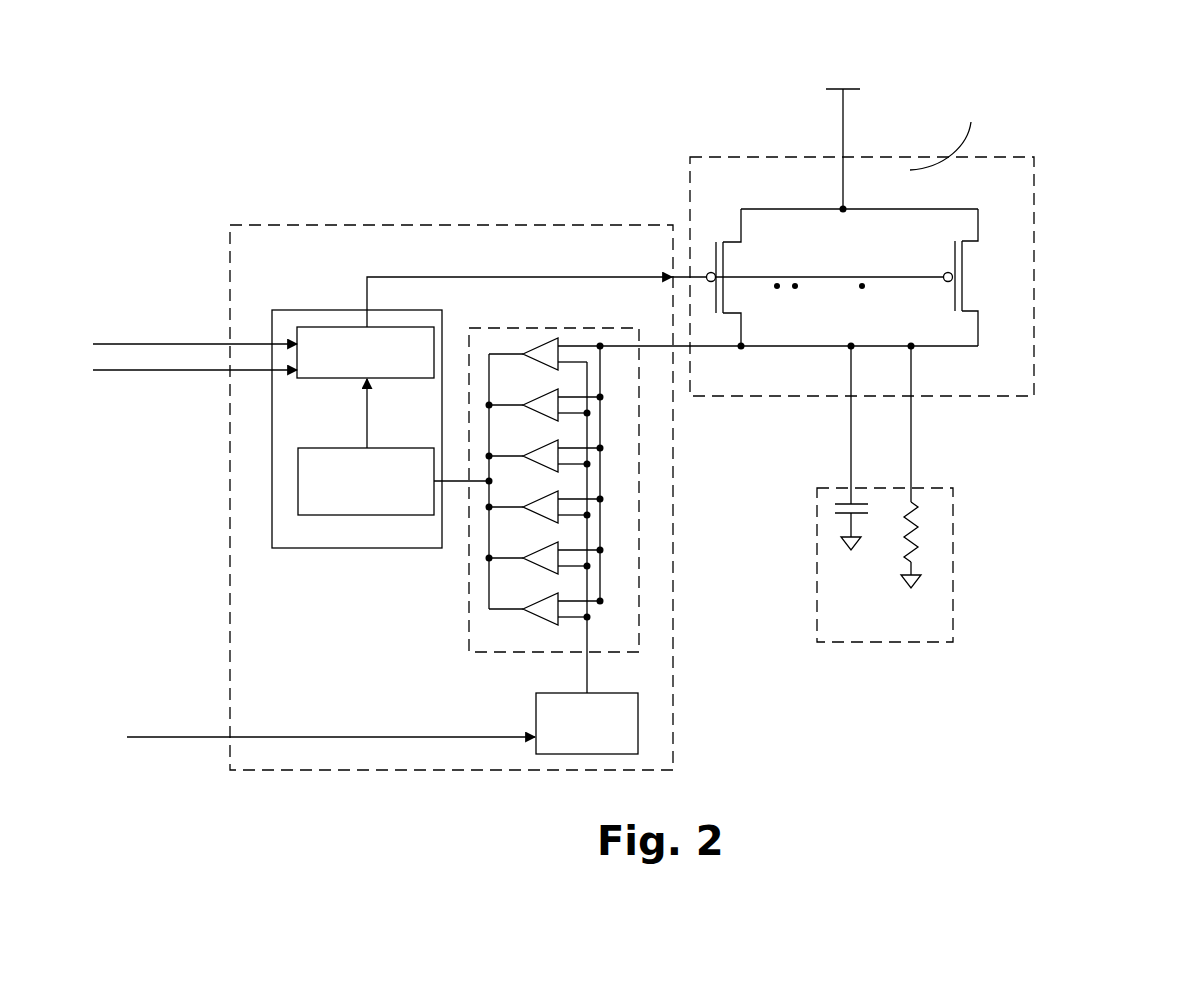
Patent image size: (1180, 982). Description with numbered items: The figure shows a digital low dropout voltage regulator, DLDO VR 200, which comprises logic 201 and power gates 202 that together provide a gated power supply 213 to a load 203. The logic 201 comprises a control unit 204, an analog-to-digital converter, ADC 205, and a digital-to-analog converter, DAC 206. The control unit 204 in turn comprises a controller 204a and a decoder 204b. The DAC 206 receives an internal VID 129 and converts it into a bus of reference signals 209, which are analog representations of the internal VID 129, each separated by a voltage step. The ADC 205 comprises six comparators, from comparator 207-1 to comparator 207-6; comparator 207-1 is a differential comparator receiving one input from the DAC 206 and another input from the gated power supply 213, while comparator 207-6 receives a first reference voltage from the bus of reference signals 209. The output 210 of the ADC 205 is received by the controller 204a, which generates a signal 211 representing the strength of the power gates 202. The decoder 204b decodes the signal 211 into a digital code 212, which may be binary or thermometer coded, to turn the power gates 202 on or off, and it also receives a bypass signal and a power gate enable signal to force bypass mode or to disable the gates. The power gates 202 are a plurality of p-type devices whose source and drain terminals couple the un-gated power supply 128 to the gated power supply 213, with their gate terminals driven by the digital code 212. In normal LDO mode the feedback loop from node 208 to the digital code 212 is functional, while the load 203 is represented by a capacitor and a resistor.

The DLDO VR 200 is at (613, 410).
The logic 201 is at (451, 497).
The power gates 202 is at (862, 248).
The load 203 is at (885, 494).
The control unit 204 is at (357, 429).
The controller 204a is at (366, 481).
The decoder 204b is at (365, 352).
The analog-to-digital converter (ADC) 205 is at (526, 496).
The digital-to-analog converter (DAC) 206 is at (587, 723).
The comparator 207-1 is at (553, 357).
The comparator 207-6 is at (545, 612).
The feedback node 208 is at (645, 346).
The bus of reference signals 209 is at (588, 672).
The output of ADC 210 is at (455, 481).
The signal 211 is at (367, 413).
The digital code 212 is at (400, 275).
The gated power supply 213 is at (978, 346).
The un-gated power supply 128 is at (843, 120).
The internal VID 129 is at (321, 708).